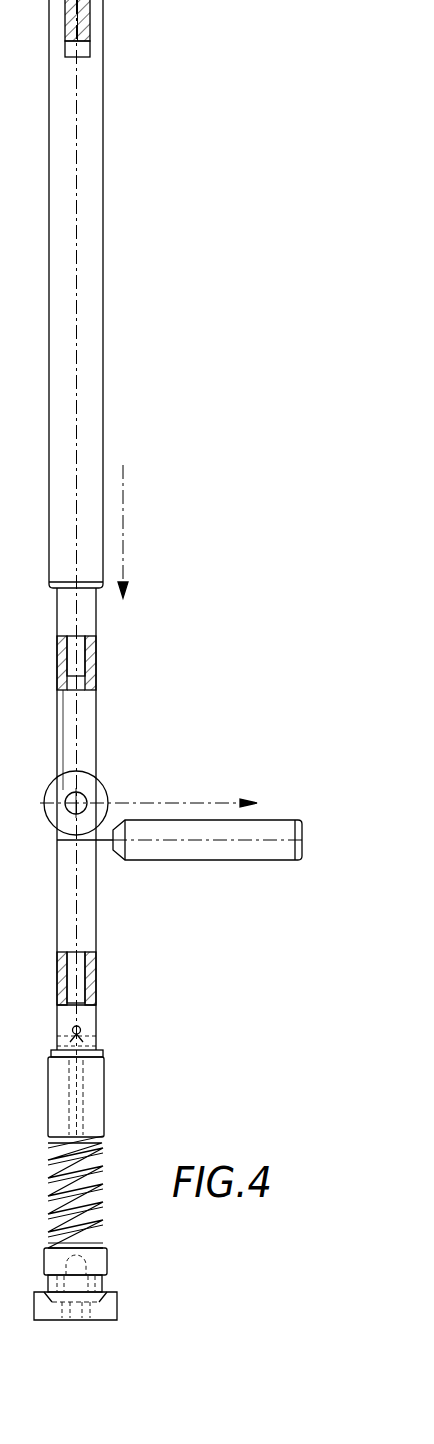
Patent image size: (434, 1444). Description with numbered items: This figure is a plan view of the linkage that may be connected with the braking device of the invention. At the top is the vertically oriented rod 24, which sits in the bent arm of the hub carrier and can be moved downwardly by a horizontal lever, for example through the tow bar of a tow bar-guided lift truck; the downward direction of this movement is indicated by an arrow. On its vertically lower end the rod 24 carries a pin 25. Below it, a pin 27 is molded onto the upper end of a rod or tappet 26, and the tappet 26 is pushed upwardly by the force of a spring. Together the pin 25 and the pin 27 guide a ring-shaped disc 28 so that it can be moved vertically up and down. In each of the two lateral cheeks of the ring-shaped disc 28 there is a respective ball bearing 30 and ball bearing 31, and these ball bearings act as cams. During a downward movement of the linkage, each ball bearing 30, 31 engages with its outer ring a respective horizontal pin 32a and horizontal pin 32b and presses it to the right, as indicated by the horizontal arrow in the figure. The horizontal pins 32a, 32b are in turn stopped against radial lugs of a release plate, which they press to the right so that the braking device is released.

The rod 24 is at (95, 362).
The pin 25 is at (80, 648).
The ring-shaped disc 28 is at (85, 718).
The ball bearing 30 is at (124, 789).
The ball bearing 31 is at (104, 790).
The horizontal pin 32a is at (254, 817).
The horizontal pin 32b is at (283, 826).
The pin 27 is at (80, 960).
The tappet 26 is at (93, 1078).